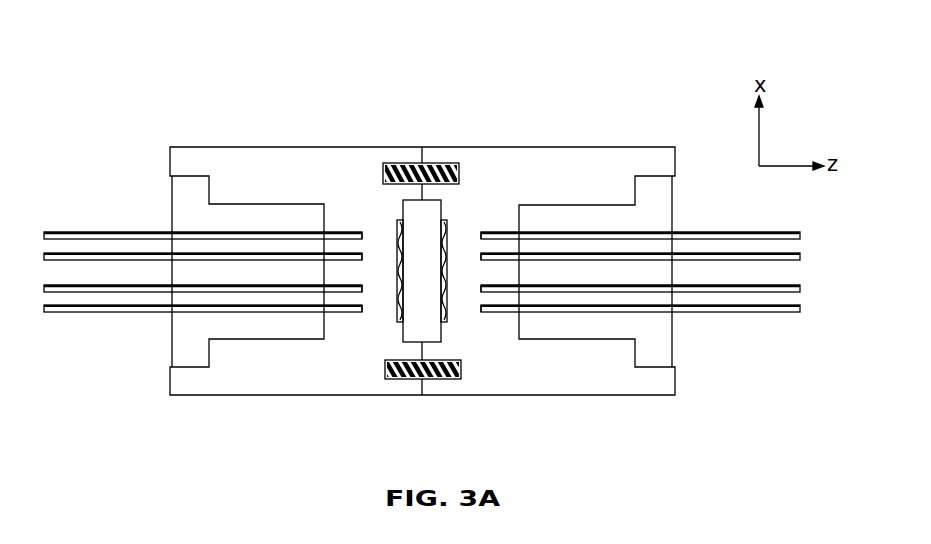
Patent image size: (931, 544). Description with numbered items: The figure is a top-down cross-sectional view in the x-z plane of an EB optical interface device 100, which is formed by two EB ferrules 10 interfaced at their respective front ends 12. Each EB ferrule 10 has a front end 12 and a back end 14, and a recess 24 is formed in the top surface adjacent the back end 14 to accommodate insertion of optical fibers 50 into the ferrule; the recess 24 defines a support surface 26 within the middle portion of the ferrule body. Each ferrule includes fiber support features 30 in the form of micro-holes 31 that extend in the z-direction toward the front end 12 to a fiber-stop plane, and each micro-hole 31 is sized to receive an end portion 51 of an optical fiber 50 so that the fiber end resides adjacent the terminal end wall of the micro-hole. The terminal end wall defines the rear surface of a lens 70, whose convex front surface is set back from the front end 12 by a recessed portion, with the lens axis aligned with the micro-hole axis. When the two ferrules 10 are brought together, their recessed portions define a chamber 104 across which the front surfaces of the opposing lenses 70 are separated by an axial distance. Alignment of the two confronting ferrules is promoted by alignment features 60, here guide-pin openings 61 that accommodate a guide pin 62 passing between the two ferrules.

The EB optical interface device 100 is at (291, 46).
The EB ferrule 10 is at (258, 133).
The back end 14 is at (169, 158).
The recess 24 is at (180, 211).
The support surface 26 is at (180, 340).
The micro-hole 31 is at (335, 231).
The fiber support feature 30 is at (335, 334).
The optical fiber 50 is at (98, 214).
The end portion 51 is at (343, 313).
The front end 12 is at (425, 160).
The alignment feature 60 is at (412, 150).
The guide-pin opening 61 is at (403, 163).
The guide pin 62 is at (430, 168).
The chamber 104 is at (423, 217).
The lens 70 is at (430, 228).